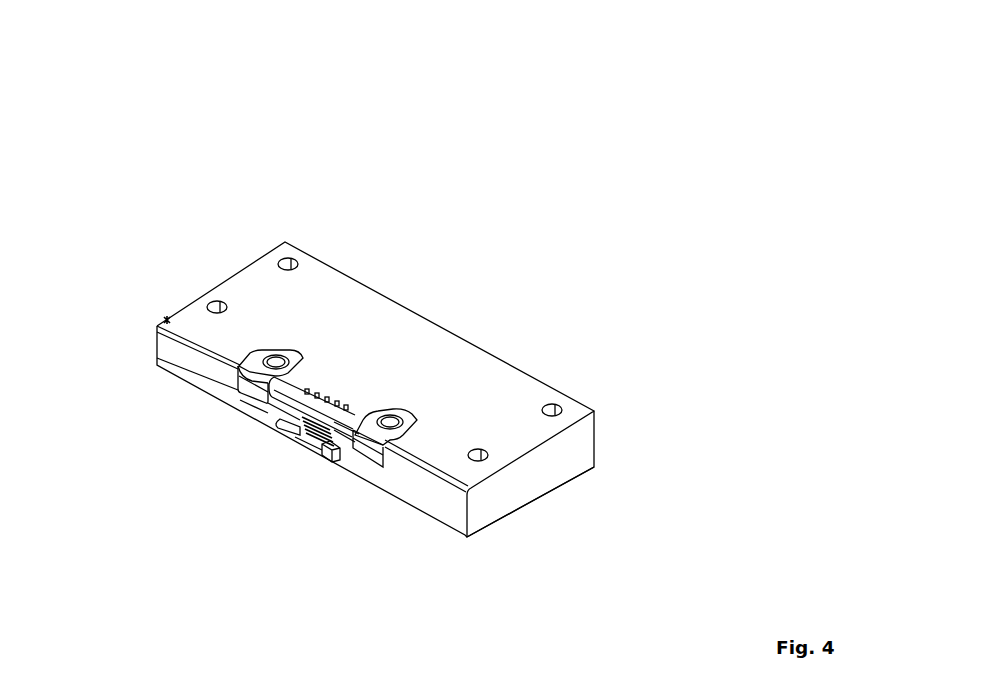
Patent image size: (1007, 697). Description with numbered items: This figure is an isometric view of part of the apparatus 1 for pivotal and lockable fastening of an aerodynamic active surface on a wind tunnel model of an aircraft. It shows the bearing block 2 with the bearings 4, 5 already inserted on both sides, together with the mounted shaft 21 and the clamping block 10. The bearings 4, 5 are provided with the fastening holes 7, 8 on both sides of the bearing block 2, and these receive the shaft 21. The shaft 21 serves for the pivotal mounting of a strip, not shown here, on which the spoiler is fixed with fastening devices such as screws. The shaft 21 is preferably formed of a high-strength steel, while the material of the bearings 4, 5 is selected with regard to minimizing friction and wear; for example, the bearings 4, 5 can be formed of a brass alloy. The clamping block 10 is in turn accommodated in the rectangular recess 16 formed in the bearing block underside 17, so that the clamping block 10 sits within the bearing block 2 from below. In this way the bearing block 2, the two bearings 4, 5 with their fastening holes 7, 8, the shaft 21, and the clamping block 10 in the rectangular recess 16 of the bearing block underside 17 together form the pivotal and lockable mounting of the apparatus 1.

The apparatus 1 is at (473, 65).
The bearing block 2 is at (517, 390).
The bearing 4 is at (232, 264).
The bearing 5 is at (523, 296).
The fastening hole 7 is at (276, 357).
The fastening hole 8 is at (388, 415).
The clamping block 10 is at (293, 400).
The rectangular recess 16 is at (339, 460).
The bearing block underside 17 is at (548, 490).
The shaft 21 is at (295, 393).